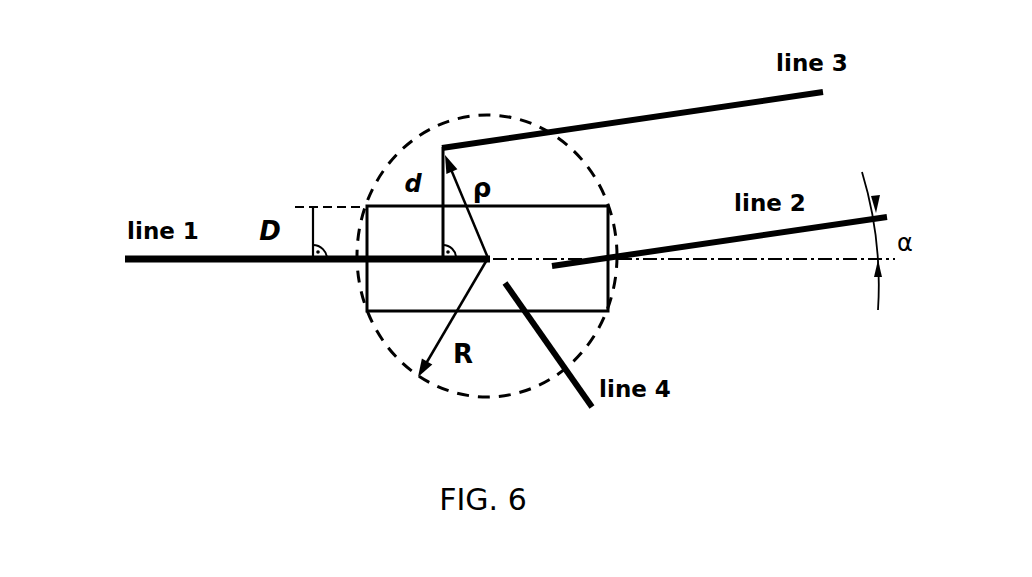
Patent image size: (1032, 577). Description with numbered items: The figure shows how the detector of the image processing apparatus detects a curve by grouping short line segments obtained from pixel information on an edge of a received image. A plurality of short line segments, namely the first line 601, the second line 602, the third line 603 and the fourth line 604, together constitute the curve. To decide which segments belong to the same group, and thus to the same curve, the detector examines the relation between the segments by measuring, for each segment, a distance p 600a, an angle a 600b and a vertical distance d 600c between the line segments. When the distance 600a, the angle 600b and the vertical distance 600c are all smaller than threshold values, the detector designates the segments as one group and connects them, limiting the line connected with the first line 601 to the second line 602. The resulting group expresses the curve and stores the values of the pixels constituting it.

The distance p 600a is at (470, 223).
The angle a 600b is at (458, 248).
The vertical distance d 600c is at (440, 222).
The line 1 601 is at (185, 264).
The line 2 602 is at (703, 240).
The line 3 603 is at (648, 116).
The line 4 604 is at (560, 350).